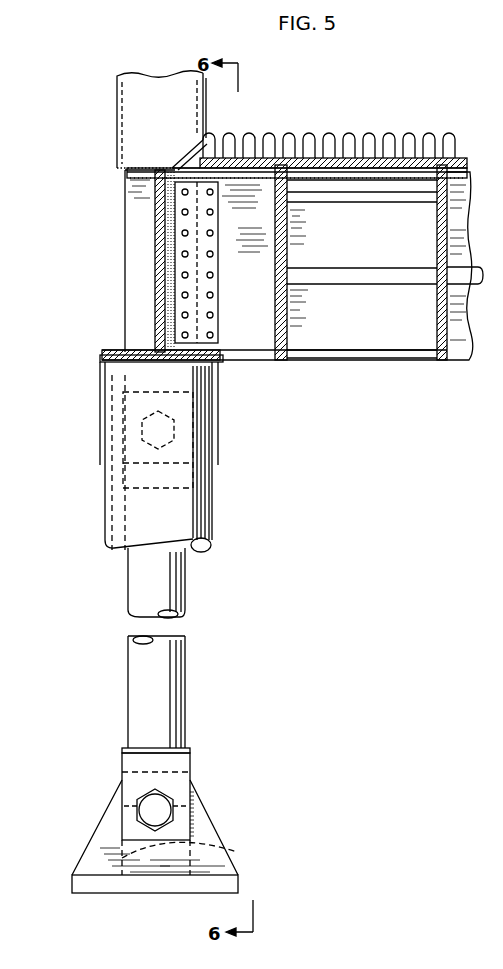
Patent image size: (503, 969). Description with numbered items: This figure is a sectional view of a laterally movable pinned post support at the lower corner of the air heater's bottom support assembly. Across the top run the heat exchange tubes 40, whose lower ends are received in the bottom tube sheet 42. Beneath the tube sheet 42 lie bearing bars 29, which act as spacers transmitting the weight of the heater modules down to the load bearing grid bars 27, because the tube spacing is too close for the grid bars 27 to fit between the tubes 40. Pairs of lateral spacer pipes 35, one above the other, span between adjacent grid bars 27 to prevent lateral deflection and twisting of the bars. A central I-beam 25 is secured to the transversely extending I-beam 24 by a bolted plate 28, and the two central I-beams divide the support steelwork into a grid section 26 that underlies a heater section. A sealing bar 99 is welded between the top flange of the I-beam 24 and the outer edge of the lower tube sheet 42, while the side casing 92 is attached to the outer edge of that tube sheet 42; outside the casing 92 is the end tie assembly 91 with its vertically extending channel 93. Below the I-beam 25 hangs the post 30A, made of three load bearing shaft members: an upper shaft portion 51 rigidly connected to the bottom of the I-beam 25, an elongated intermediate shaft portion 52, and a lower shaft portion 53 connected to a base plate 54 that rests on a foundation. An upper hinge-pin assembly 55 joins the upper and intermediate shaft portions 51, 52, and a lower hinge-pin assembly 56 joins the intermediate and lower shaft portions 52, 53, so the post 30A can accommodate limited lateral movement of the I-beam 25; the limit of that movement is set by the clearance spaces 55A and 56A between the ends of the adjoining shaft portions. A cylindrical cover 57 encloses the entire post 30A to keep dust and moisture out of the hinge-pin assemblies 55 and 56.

The I-beam 24 is at (153, 258).
The central I-beam 25 is at (463, 215).
The grid section 26 is at (496, 327).
The grid bar 27 is at (283, 300).
The plate 28 is at (218, 232).
The bearing bar 29 is at (272, 180).
The spacer pipe 35 is at (366, 276).
The tube 40 is at (318, 138).
The bottom tube sheet 42 is at (447, 160).
The upper shaft portion 51 is at (190, 378).
The intermediate shaft portion 52 is at (173, 662).
The lower shaft portion 53 is at (232, 852).
The base plate 54 is at (140, 883).
The upper hinge-pin assembly 55 is at (174, 447).
The space 55A is at (110, 433).
The lower hinge-pin assembly 56 is at (194, 801).
The space 56A is at (134, 808).
The cylindrical cover 57 is at (195, 505).
The post 30A is at (121, 599).
The end tie assembly 91 is at (104, 122).
The side casing 92 is at (206, 105).
The channel 93 is at (143, 92).
The sealing bar 99 is at (176, 164).